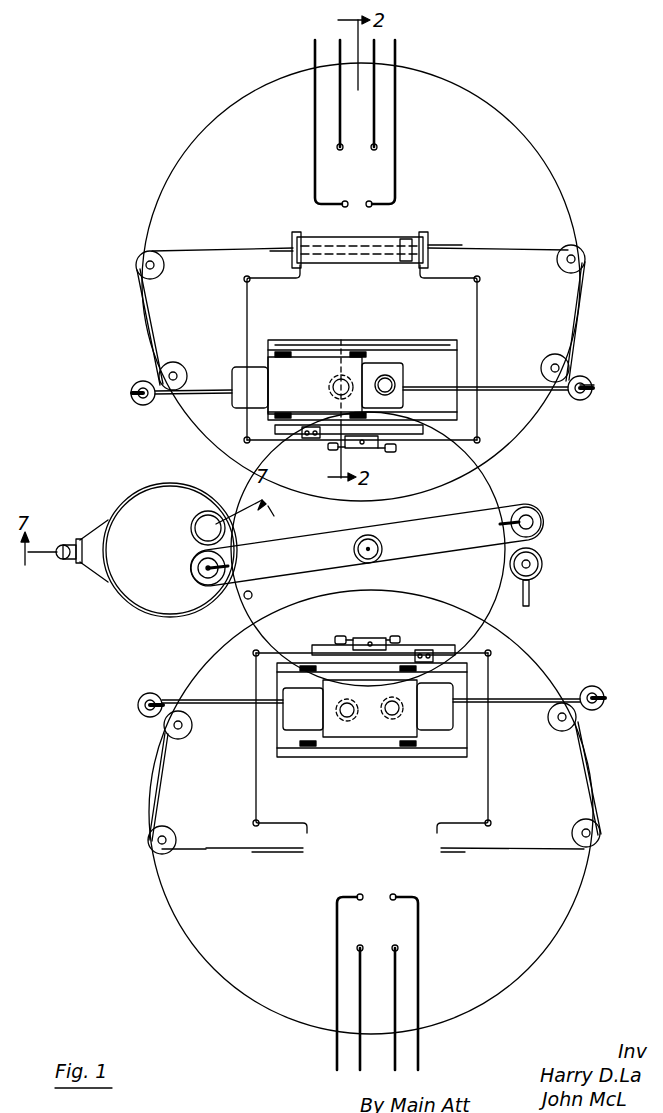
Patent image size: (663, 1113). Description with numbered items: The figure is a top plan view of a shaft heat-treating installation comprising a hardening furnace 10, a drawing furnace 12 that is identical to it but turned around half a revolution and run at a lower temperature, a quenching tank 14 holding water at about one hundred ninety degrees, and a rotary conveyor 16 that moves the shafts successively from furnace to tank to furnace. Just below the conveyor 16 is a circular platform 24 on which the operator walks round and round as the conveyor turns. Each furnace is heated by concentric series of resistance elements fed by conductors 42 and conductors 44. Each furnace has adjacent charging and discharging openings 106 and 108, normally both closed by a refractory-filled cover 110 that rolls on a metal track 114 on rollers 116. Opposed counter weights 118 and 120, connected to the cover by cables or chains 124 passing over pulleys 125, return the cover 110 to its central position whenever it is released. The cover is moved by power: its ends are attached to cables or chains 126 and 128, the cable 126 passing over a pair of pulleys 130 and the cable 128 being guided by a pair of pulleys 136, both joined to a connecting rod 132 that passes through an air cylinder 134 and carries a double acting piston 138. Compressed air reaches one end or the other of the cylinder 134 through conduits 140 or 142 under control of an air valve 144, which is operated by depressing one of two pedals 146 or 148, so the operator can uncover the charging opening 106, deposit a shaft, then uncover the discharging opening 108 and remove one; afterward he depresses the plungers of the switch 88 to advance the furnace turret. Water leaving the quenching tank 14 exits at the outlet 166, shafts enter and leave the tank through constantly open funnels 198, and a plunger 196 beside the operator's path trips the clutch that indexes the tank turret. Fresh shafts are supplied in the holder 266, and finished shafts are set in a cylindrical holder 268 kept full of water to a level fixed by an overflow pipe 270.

The hardening furnace 10 is at (543, 190).
The drawing furnace 12 is at (545, 920).
The quenching tank 14 is at (140, 502).
The rotary conveyor 16 is at (490, 521).
The circular platform 24 is at (485, 595).
The conductors 42 is at (313, 57).
The conductors 44 is at (372, 150).
The switch 88 is at (312, 440).
The charging opening 106 is at (386, 378).
The discharging opening 108 is at (348, 372).
The cover 110 is at (290, 362).
The metal track 114 is at (455, 345).
The rollers 116 is at (362, 350).
The counter weight 118 is at (590, 386).
The counter weight 120 is at (134, 386).
The cables or chains 124 is at (185, 395).
The pulleys 125 is at (590, 396).
The cable or chain 126 is at (540, 252).
The cable or chain 128 is at (208, 252).
The pulleys 130 is at (576, 256).
The connecting rod 132 is at (488, 252).
The air cylinder 134 is at (384, 240).
The pulleys 136 is at (145, 262).
The double acting piston 138 is at (410, 238).
The conduit 140 is at (249, 322).
The conduit 142 is at (479, 365).
The air valve 144 is at (378, 448).
The pedal 146 is at (396, 449).
The pedal 148 is at (330, 452).
The outlet 166 is at (64, 545).
The plunger 196 is at (244, 600).
The funnels 198 is at (194, 566).
The holder 266 is at (542, 518).
The cylindrical holder 268 is at (544, 564).
The overflow pipe 270 is at (531, 595).